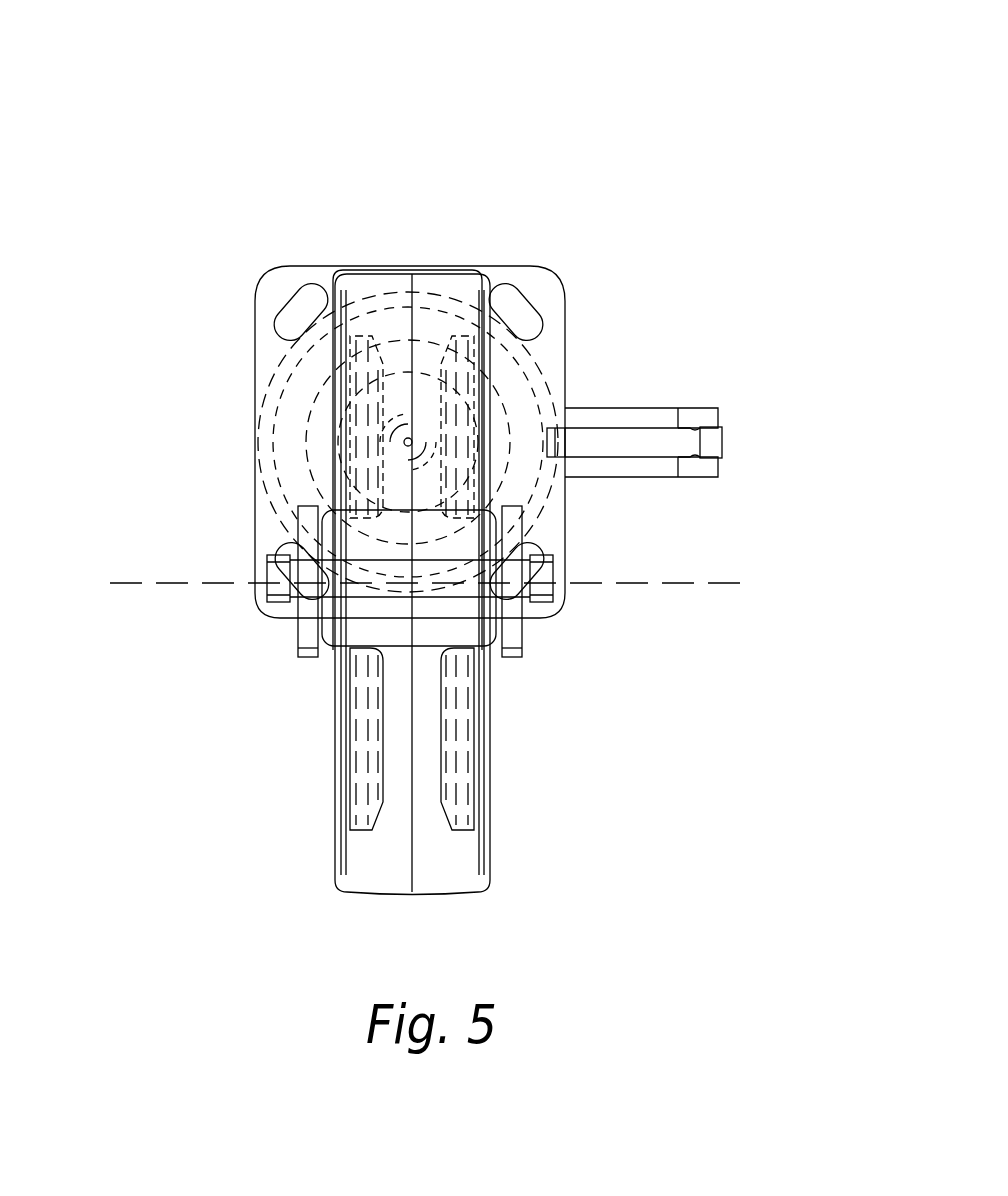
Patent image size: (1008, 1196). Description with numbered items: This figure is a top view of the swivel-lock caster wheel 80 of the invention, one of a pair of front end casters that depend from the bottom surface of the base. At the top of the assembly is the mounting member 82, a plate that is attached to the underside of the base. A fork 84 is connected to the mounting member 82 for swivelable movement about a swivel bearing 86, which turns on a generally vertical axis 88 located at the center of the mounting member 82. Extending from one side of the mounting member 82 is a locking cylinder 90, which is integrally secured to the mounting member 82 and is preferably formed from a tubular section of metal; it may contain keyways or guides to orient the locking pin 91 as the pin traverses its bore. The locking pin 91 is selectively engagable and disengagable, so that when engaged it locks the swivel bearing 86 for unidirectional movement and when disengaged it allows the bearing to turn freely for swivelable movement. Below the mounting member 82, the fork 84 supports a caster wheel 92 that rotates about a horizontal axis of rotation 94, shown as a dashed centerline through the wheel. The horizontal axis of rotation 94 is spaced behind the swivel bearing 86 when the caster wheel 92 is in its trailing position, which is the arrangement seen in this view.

The swivel-lock caster wheel 80 is at (480, 213).
The mounting member 82 is at (268, 287).
The fork 84 is at (307, 636).
The swivel bearing 86 is at (272, 432).
The vertical axis 88 is at (408, 440).
The locking cylinder 90 is at (665, 407).
The locking pin 91 is at (603, 440).
The caster wheel 92 is at (438, 868).
The horizontal axis of rotation 94 is at (694, 582).